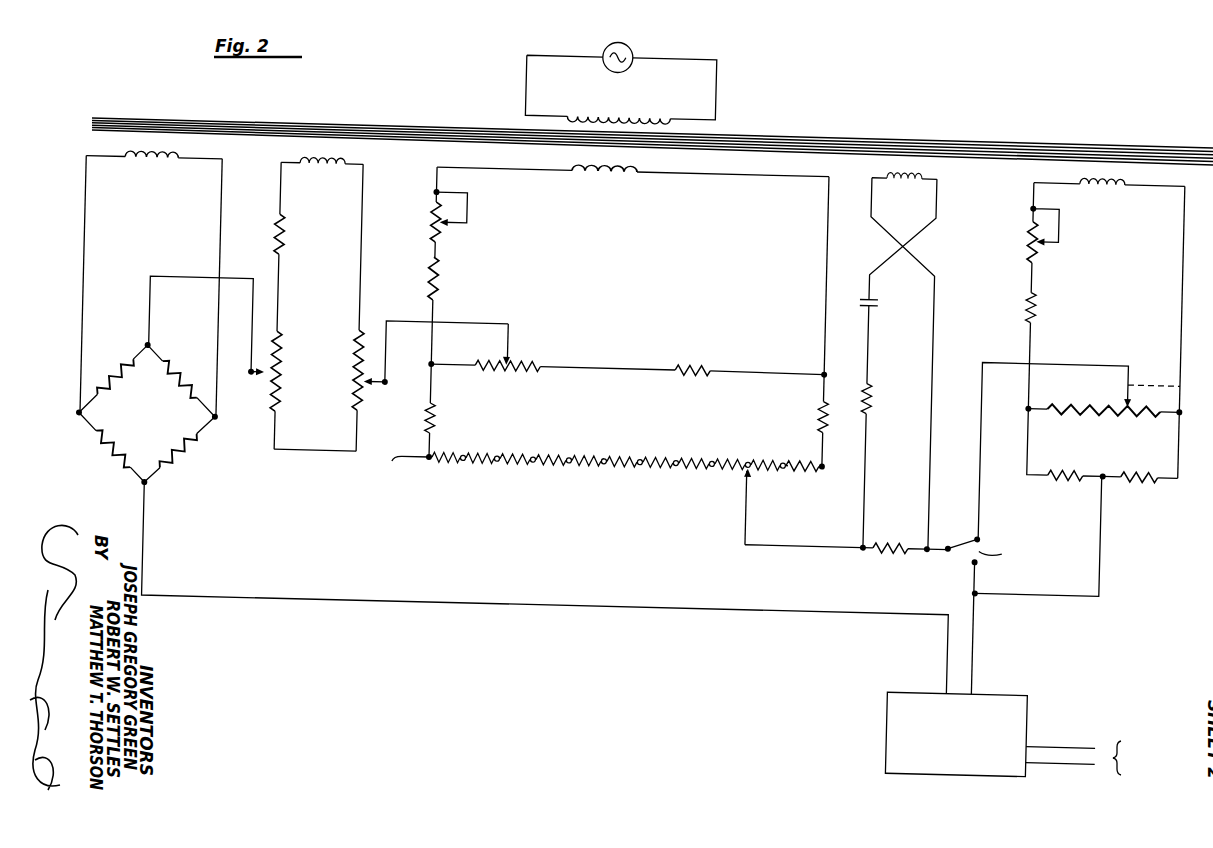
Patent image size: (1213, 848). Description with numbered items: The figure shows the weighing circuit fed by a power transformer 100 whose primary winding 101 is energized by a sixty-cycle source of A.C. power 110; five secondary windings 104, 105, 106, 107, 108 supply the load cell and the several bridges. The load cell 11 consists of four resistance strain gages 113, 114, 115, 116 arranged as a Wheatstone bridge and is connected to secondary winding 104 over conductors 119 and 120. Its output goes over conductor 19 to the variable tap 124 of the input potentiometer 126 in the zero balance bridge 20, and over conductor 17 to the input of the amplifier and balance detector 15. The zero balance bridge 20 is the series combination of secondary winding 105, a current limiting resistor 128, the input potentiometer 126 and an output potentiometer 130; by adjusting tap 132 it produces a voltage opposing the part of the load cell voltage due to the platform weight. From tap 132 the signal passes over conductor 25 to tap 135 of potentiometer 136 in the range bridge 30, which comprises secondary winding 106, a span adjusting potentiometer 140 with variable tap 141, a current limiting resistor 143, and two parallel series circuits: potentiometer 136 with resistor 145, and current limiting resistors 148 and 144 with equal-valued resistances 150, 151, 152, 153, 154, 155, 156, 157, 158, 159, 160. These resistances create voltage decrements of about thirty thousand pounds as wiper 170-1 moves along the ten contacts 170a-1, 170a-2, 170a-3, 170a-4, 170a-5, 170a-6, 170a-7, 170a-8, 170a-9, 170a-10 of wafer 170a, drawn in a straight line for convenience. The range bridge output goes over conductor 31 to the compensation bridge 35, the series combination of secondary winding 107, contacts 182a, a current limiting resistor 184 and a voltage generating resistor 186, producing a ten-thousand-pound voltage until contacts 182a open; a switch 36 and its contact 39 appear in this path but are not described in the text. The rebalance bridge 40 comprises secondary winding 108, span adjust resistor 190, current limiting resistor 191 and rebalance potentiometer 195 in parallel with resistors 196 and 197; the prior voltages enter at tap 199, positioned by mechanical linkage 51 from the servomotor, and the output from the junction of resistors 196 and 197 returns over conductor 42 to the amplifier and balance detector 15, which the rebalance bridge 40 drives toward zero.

The power transformer 100 is at (760, 116).
The source of A.C. power 110 is at (634, 55).
The primary winding 101 is at (628, 113).
The secondary winding 104 is at (147, 163).
The secondary winding 105 is at (322, 170).
The secondary winding 106 is at (607, 180).
The secondary winding 107 is at (907, 184).
The secondary winding 108 is at (1108, 187).
The load cell 11 is at (156, 421).
The resistance strain gage 113 is at (109, 372).
The resistance strain gage 114 is at (106, 452).
The resistance strain gage 115 is at (180, 372).
The resistance strain gage 116 is at (182, 452).
The conductor 119 is at (89, 240).
The conductor 120 is at (222, 229).
The conductor 19 is at (180, 277).
The conductor 17 is at (290, 597).
The zero balance bridge 20 is at (331, 294).
The variable tap 124 is at (258, 384).
The input potentiometer 126 is at (282, 386).
The current limiting resistor 128 is at (284, 233).
The output potentiometer 130 is at (352, 370).
The tap 132 is at (368, 388).
The conductor 25 is at (395, 321).
The range bridge 30 is at (634, 275).
The tap 135 is at (510, 360).
The potentiometer 136 is at (532, 360).
The span adjusting potentiometer 140 is at (430, 209).
The variable tap 141 is at (445, 230).
The current limiting resistor 143 is at (441, 288).
The current limiting resistor 144 is at (824, 405).
The resistor 145 is at (695, 368).
The current limiting resistor 148 is at (433, 420).
The resistance 150 is at (456, 463).
The resistance 151 is at (491, 464).
The resistance 152 is at (527, 465).
The resistance 153 is at (563, 465).
The resistance 154 is at (599, 466).
The resistance 155 is at (635, 467).
The resistance 156 is at (671, 468).
The resistance 157 is at (707, 469).
The resistance 158 is at (742, 470).
The resistance 159 is at (778, 471).
The resistance 160 is at (800, 472).
The wafer 170a is at (814, 458).
The contact 170a-1 is at (380, 485).
The contact 170a-2 is at (768, 524).
The contact 170a-3 is at (698, 524).
The contact 170a-4 is at (668, 502).
The contact 170a-5 is at (625, 524).
The contact 170a-6 is at (598, 502).
The contact 170a-7 is at (553, 522).
The contact 170a-8 is at (524, 500).
The contact 170a-9 is at (480, 522).
The contact 170a-10 is at (452, 500).
The wiper 170-1 is at (745, 548).
The conductor 31 is at (806, 552).
The compensation bridge 35 is at (950, 255).
The contacts 182a is at (880, 302).
The current limiting resistor 184 is at (870, 396).
The voltage generating resistor 186 is at (897, 545).
The switch 36 is at (949, 546).
The switch contact 39 is at (984, 551).
The conductor 42 is at (1102, 577).
The amplifier and balance detector 15 is at (886, 707).
The rebalance bridge 40 is at (1135, 289).
The span adjust resistor 190 is at (1042, 252).
The current limiting resistor 191 is at (1036, 306).
The rebalance potentiometer 195 is at (1057, 400).
The resistor 196 is at (1066, 474).
The resistor 197 is at (1141, 474).
The tap 199 is at (1122, 404).
The mechanical linkage 51 is at (1199, 384).